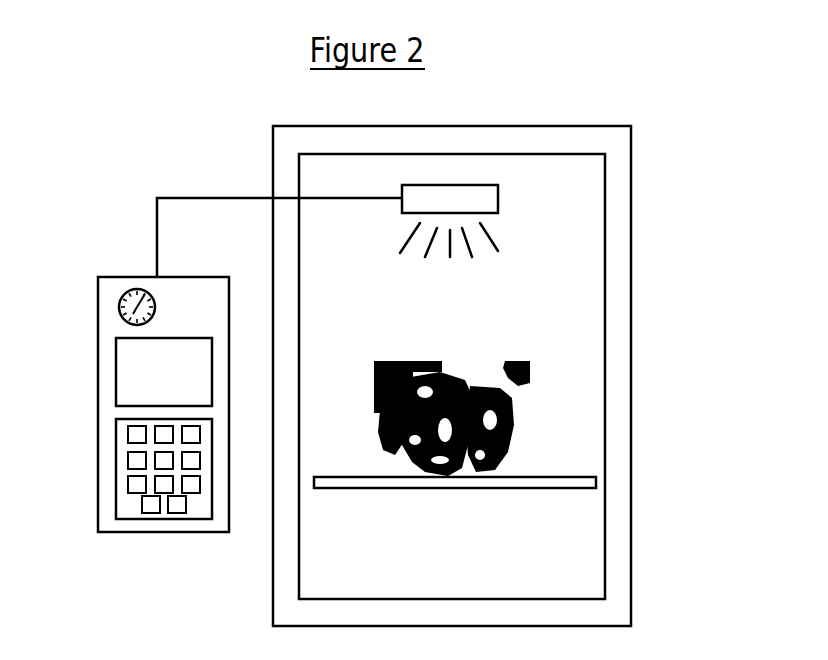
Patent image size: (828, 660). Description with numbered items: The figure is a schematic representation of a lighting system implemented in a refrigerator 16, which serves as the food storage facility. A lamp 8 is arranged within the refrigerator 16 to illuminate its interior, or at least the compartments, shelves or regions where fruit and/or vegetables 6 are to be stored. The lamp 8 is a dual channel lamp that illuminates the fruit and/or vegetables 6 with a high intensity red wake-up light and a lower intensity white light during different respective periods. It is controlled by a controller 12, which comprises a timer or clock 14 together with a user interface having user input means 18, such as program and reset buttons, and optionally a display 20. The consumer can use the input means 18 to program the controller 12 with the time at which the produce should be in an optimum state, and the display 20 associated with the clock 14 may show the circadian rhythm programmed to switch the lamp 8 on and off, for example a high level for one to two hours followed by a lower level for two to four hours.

The fruit and/or vegetables 6 is at (471, 415).
The lamp 8 is at (360, 231).
The controller 12 is at (139, 439).
The timer 14 is at (102, 317).
The refrigerator 16 is at (479, 376).
The user input means 18 is at (135, 469).
The display 20 is at (135, 383).